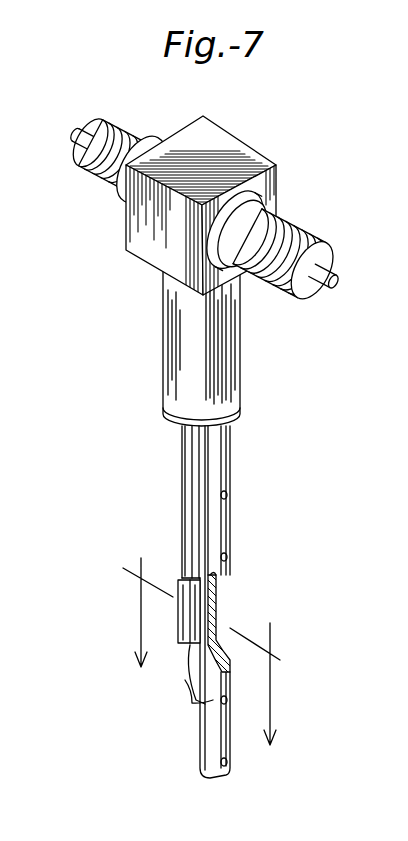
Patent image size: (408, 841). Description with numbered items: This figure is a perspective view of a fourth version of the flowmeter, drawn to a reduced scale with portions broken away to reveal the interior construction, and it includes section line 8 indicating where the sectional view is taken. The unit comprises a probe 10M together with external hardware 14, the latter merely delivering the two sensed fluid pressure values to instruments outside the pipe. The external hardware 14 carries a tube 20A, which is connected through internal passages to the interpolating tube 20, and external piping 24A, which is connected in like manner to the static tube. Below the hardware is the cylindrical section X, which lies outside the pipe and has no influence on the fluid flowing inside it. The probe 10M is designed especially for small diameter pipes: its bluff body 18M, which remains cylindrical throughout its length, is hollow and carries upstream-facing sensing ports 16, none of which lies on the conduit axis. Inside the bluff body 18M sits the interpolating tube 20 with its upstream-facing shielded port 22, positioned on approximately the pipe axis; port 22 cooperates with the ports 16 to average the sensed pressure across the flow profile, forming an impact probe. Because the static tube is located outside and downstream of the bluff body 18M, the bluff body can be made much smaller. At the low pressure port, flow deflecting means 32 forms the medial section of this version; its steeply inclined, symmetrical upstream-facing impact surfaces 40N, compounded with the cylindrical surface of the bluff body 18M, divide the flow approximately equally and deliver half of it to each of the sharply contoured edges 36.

The external hardware 14 is at (273, 127).
The external piping 24A is at (77, 135).
The tube 20A is at (337, 288).
The cylindrical section X is at (147, 347).
The probe 10M is at (237, 610).
The bluff body 18M is at (228, 497).
The upstream-facing sensing ports 16 is at (228, 559).
The sharply contoured edges 36 is at (179, 598).
The interpolating tube 20 is at (224, 604).
The upstream-facing shielded port 22 is at (226, 627).
The flow deflecting means 32 is at (171, 658).
The upstream-facing impact surfaces 40N is at (213, 700).
The section line 8- 8 is at (201, 671).